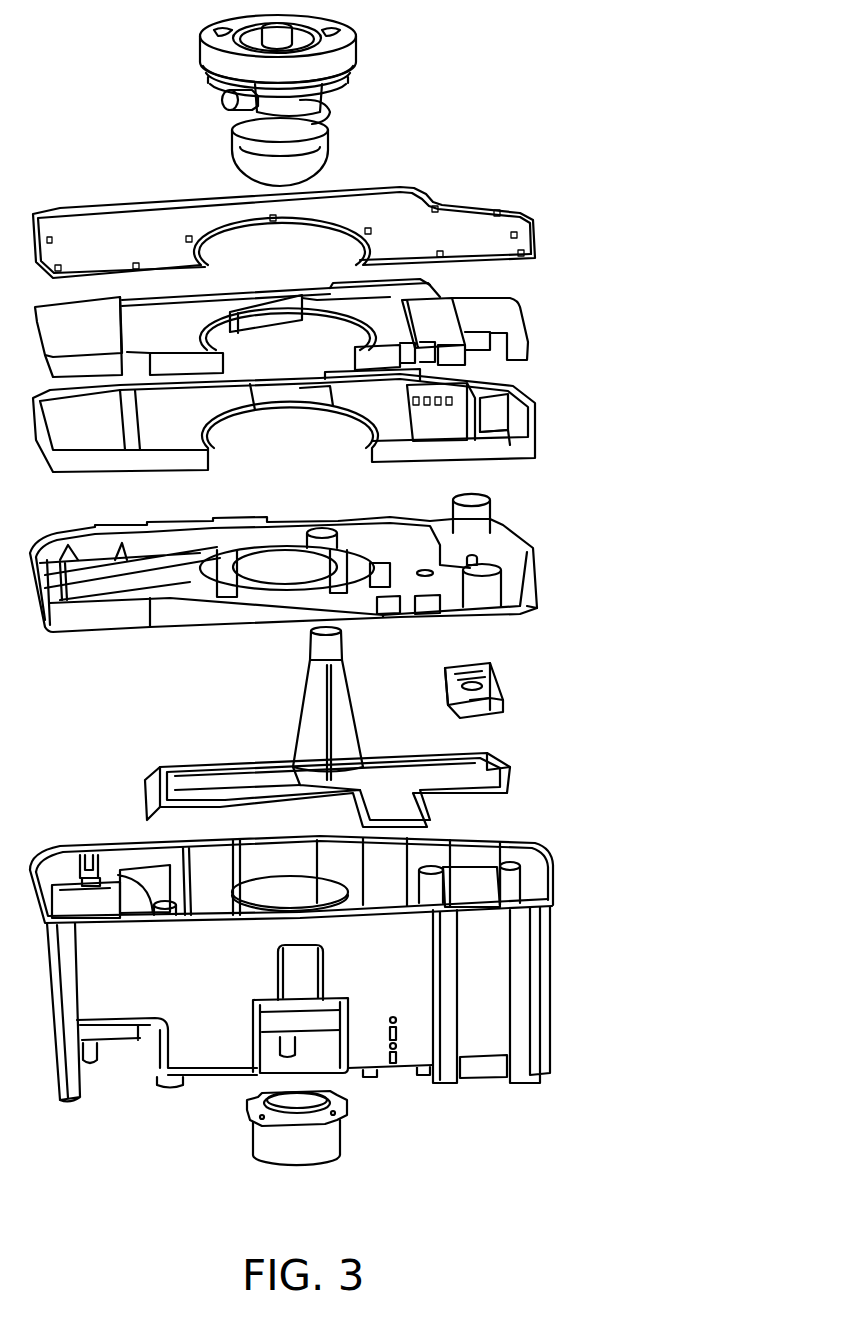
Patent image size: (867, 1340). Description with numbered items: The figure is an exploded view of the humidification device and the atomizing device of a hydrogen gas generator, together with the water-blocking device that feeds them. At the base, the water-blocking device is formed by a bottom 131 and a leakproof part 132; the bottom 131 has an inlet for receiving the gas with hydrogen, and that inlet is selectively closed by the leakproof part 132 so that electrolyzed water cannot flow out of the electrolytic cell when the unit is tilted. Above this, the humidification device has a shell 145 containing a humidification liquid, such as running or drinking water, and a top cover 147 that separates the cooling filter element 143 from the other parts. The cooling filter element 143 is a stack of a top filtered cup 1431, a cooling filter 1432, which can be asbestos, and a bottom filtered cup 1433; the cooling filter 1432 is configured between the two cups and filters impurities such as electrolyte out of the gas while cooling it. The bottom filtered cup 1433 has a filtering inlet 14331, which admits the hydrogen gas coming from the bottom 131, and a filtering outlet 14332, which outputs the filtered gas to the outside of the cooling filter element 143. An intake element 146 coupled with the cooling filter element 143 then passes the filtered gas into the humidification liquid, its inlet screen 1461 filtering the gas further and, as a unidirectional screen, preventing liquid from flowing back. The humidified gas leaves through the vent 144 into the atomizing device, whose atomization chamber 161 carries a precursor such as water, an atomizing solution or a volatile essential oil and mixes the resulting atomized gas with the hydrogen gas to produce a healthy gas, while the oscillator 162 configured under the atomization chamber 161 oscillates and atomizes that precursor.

The atomization chamber 161 is at (353, 71).
The vent 144 is at (218, 100).
The cooling filter element 143 is at (373, 341).
The top filtered cup 1431 is at (320, 232).
The cooling filter 1432 is at (321, 328).
The bottom filtered cup 1433 is at (329, 432).
The filtering inlet 14331 is at (507, 440).
The filtering outlet 14332 is at (318, 392).
The top cover 147 is at (530, 555).
The leakproof part 132 is at (505, 683).
The intake element 146 is at (281, 727).
The inlet screen 1461 is at (145, 788).
The bottom 131 is at (324, 1019).
The shell 145 is at (195, 895).
The oscillator 162 is at (348, 1140).